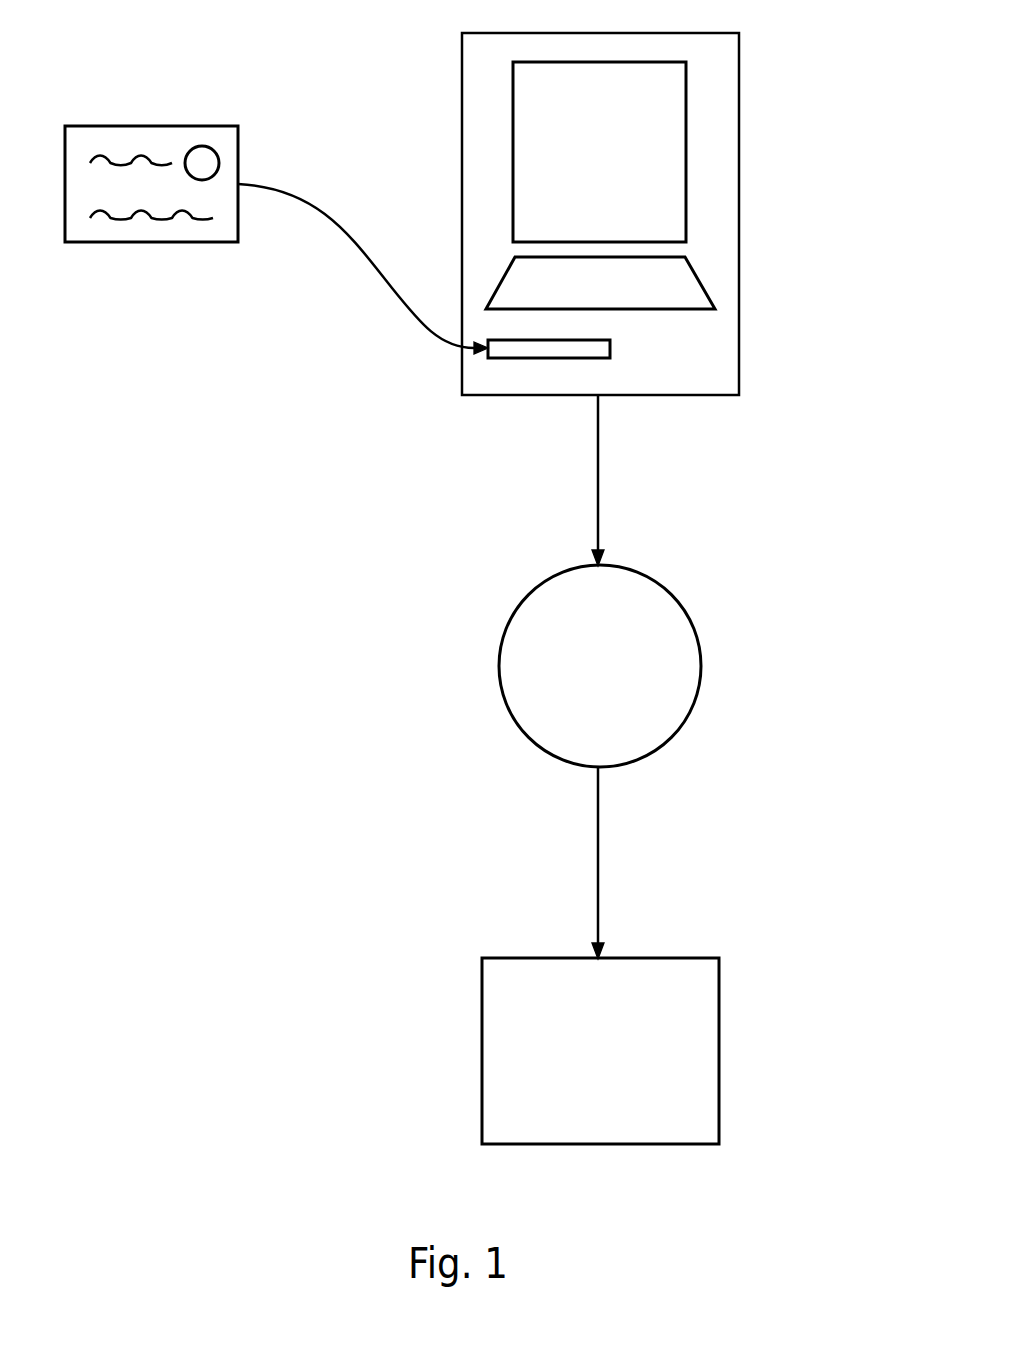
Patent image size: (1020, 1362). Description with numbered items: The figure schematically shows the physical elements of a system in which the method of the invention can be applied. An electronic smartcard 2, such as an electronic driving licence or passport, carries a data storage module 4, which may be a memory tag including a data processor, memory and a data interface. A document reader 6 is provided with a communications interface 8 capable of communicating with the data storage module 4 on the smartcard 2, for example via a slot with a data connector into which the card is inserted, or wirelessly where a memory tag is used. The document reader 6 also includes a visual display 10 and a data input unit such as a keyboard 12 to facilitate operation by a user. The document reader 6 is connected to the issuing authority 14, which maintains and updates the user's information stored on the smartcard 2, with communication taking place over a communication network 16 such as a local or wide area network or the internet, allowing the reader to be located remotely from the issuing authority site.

The electronic smartcard 2 is at (132, 243).
The data storage module 4 is at (203, 163).
The document reader 6 is at (477, 71).
The communications interface 8 is at (610, 352).
The visual display 10 is at (672, 120).
The keyboard 12 is at (690, 288).
The issuing authority 14 is at (697, 1008).
The communication network 16 is at (703, 670).